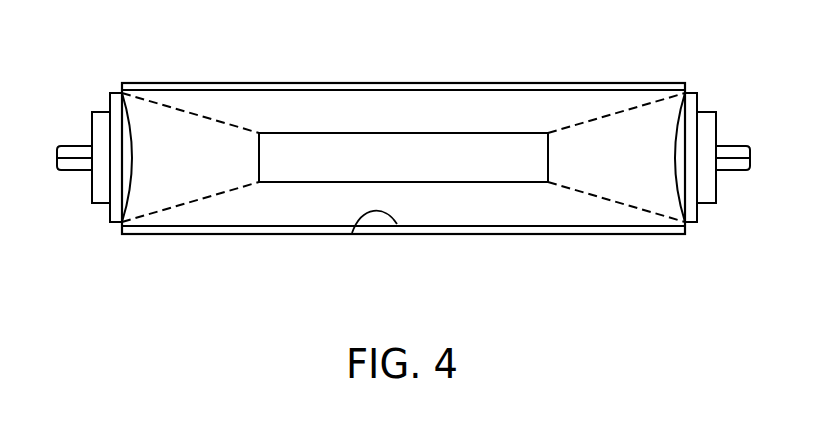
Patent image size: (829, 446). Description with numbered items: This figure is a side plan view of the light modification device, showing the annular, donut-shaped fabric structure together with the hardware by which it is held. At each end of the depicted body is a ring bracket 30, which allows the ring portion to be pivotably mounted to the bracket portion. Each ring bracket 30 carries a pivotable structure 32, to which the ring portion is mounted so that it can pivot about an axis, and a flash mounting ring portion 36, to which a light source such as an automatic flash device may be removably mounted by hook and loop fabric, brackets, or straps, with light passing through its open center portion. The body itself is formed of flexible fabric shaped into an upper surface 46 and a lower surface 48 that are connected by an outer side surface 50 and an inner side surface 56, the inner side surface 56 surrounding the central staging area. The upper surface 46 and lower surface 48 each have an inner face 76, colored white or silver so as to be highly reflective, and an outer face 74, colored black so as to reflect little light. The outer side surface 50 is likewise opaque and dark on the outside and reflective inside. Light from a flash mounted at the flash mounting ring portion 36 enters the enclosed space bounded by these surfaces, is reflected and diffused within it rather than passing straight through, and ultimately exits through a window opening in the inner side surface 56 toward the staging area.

The ring bracket 30 is at (71, 146).
The pivotable structure 32 is at (95, 112).
The flash mounting ring portion 36 is at (716, 185).
The upper surface 46 is at (657, 235).
The lower surface 48 is at (593, 82).
The outer side surface 50 is at (685, 92).
The inner side surface 56 is at (259, 152).
The outer face 74 is at (422, 235).
The inner face 76 is at (352, 233).